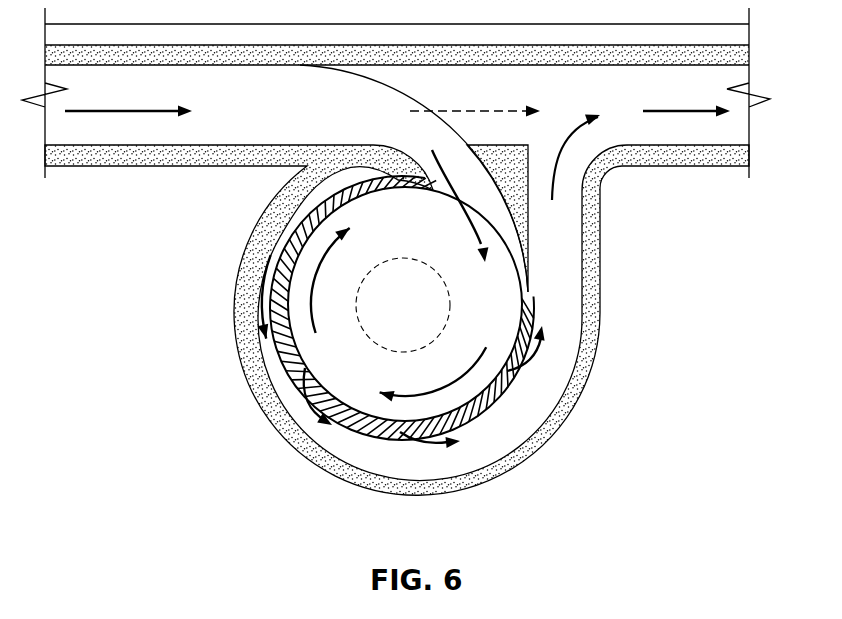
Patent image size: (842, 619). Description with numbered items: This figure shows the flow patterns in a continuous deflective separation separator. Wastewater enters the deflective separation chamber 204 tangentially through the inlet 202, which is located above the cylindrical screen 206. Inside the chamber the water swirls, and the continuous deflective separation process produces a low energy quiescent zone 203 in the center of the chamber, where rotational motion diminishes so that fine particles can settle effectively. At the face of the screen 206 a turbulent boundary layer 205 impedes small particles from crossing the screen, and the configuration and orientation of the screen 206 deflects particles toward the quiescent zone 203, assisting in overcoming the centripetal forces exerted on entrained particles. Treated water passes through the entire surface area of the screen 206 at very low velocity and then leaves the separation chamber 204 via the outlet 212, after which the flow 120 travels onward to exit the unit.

The flow 120 is at (138, 113).
The inlet 202 is at (70, 132).
The outlet 212 is at (677, 123).
The deflective separation chamber 204 is at (485, 280).
The quiescent zone 203 is at (417, 330).
The turbulent boundary layer 205 is at (305, 333).
The cylindrical screen 206 is at (487, 396).